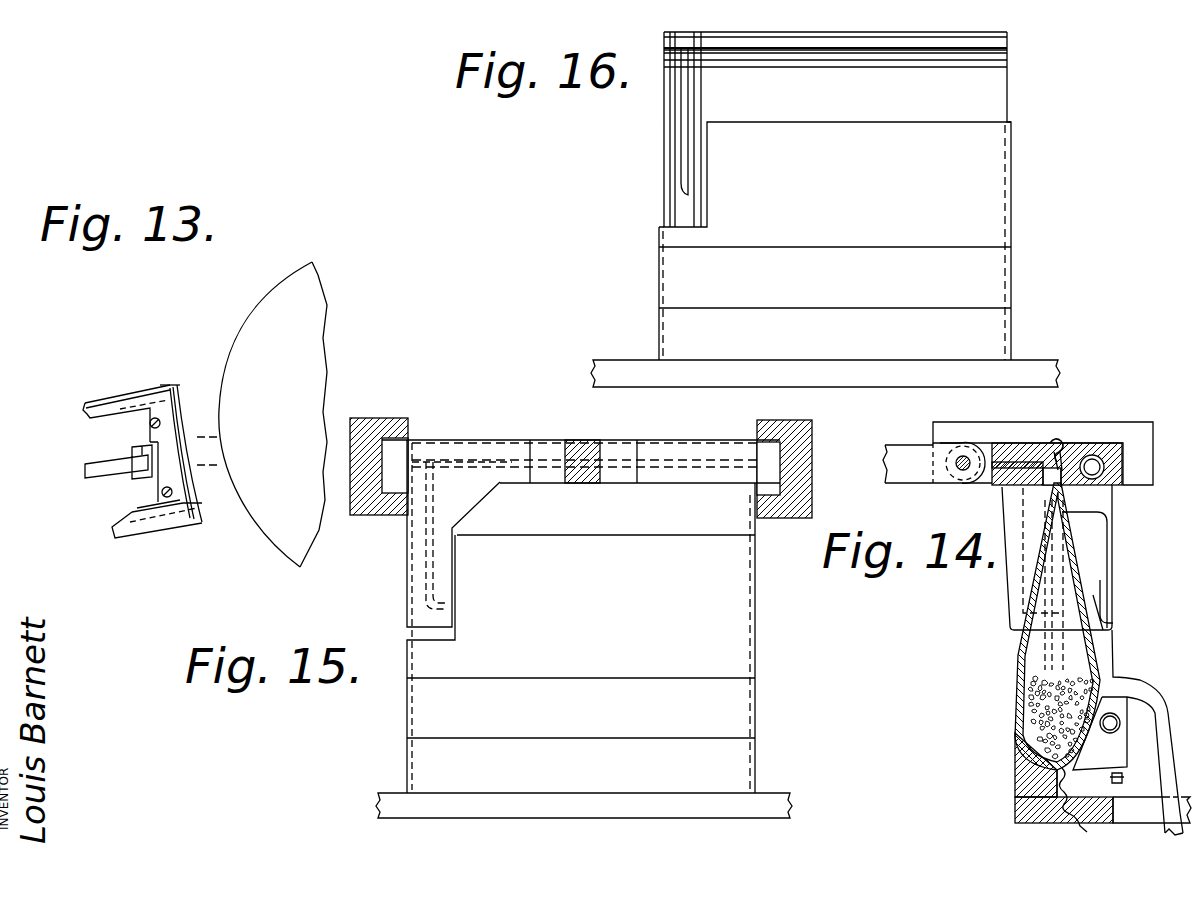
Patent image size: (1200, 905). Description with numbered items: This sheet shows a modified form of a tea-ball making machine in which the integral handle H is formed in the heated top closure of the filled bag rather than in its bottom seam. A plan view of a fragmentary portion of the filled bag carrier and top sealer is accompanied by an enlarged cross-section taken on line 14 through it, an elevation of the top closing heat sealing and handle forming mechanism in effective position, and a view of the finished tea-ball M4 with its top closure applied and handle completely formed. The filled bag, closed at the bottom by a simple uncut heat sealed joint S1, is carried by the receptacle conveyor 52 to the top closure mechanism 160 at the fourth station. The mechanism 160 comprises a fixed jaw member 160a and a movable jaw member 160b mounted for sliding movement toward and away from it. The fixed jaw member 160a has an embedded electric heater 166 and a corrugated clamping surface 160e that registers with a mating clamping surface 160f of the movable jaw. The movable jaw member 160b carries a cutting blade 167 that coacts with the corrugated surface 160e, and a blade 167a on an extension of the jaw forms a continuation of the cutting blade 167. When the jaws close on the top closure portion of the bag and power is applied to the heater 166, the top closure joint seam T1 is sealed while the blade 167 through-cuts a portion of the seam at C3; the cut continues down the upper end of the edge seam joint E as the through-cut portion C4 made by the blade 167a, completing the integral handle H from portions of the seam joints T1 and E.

In FIG. 15, the top closure mechanism 160 is at (490, 427).
In FIG. 13, the top closure mechanism 160 is at (183, 373).
In FIG. 14, the top closure mechanism 160 is at (988, 591).
In FIG. 13, the section line 14— 14 is at (82, 480).
In FIG. 15, the cutting blade 167 is at (510, 462).
In FIG. 14, the cutting blade 167 is at (1040, 478).
In FIG. 15, the blade 167a is at (428, 555).
In FIG. 16, the receptacle conveyor 52 is at (1025, 307).
In FIG. 15, the receptacle conveyor 52 is at (390, 788).
In FIG. 14, the receptacle conveyor 52 is at (1012, 788).
In FIG. 16, the handle H is at (848, 40).
In FIG. 16, the through-cut C3 is at (929, 50).
In FIG. 16, the top closure joint seam T1 is at (1009, 50).
In FIG. 16, the tea-ball M4 is at (990, 108).
In FIG. 14, the tea-ball M4 is at (1113, 547).
In FIG. 16, the through-cut portion C4 is at (682, 125).
In FIG. 16, the edge seam joint E is at (680, 207).
In FIG. 14, the corrugated clamping surface 160e is at (1062, 447).
In FIG. 14, the electric heater 166 is at (1094, 458).
In FIG. 14, the mating clamping surface 160f is at (1054, 443).
In FIG. 14, the movable jaw member 160b is at (1015, 475).
In FIG. 14, the fixed jaw member 160a is at (1110, 472).
In FIG. 14, the heat sealed joint S1 is at (1068, 795).